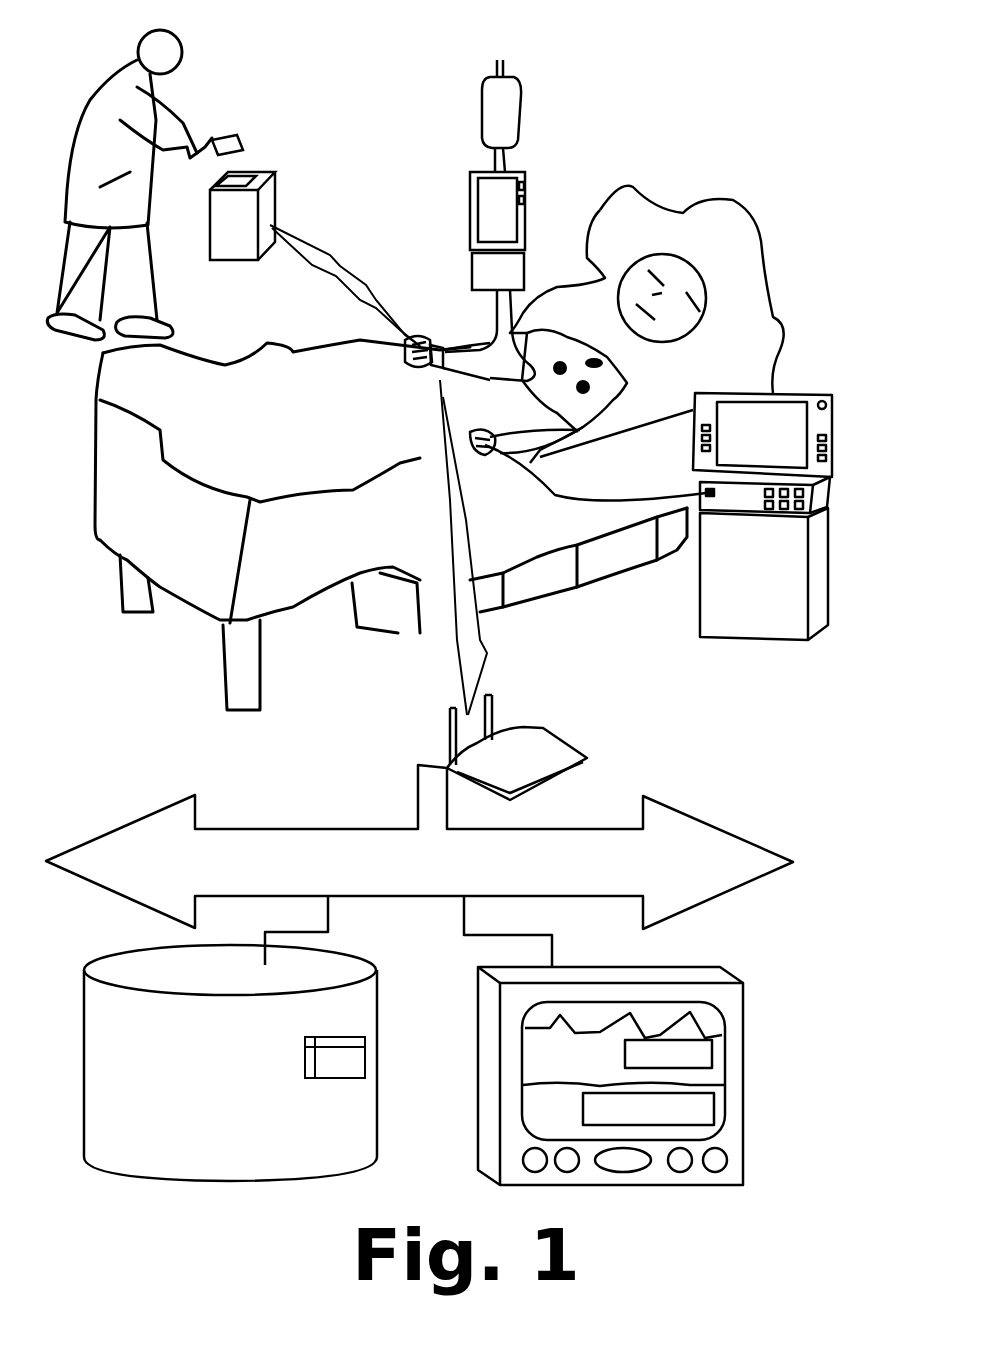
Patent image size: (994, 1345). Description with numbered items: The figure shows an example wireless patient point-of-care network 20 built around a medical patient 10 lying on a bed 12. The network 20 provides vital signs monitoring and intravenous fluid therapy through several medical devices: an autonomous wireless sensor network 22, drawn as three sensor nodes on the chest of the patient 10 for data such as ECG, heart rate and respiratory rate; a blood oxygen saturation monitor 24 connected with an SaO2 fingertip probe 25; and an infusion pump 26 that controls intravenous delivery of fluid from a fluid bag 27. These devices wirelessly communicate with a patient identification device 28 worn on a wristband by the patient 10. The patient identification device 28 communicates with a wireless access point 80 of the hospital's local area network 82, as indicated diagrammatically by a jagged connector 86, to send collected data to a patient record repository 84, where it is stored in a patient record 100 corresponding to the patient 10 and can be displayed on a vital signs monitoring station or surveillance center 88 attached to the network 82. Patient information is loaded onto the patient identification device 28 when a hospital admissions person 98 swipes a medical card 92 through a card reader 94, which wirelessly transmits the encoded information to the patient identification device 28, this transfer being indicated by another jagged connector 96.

The medical patient 10 is at (676, 258).
The bed 12 is at (213, 563).
The wireless patient point-of-care network 20 is at (628, 80).
The autonomous wireless sensor network 22 is at (578, 360).
The blood oxygen saturation monitor 24 is at (800, 393).
The SaO2 fingertip probe 25 is at (481, 448).
The infusion pump 26 is at (470, 197).
The fluid bag 27 is at (520, 100).
The patient identification device 28 is at (432, 370).
The wireless access point 80 is at (537, 747).
The local area network 82 is at (670, 803).
The patient record repository 84 is at (200, 1177).
The jagged connector 86 is at (470, 643).
The vital signs monitoring station 88 is at (663, 1185).
The medical card 92 is at (230, 137).
The card reader 94 is at (265, 198).
The jagged connector 96 is at (343, 275).
The hospital admissions person 98 is at (100, 95).
The patient record 100 is at (348, 1063).